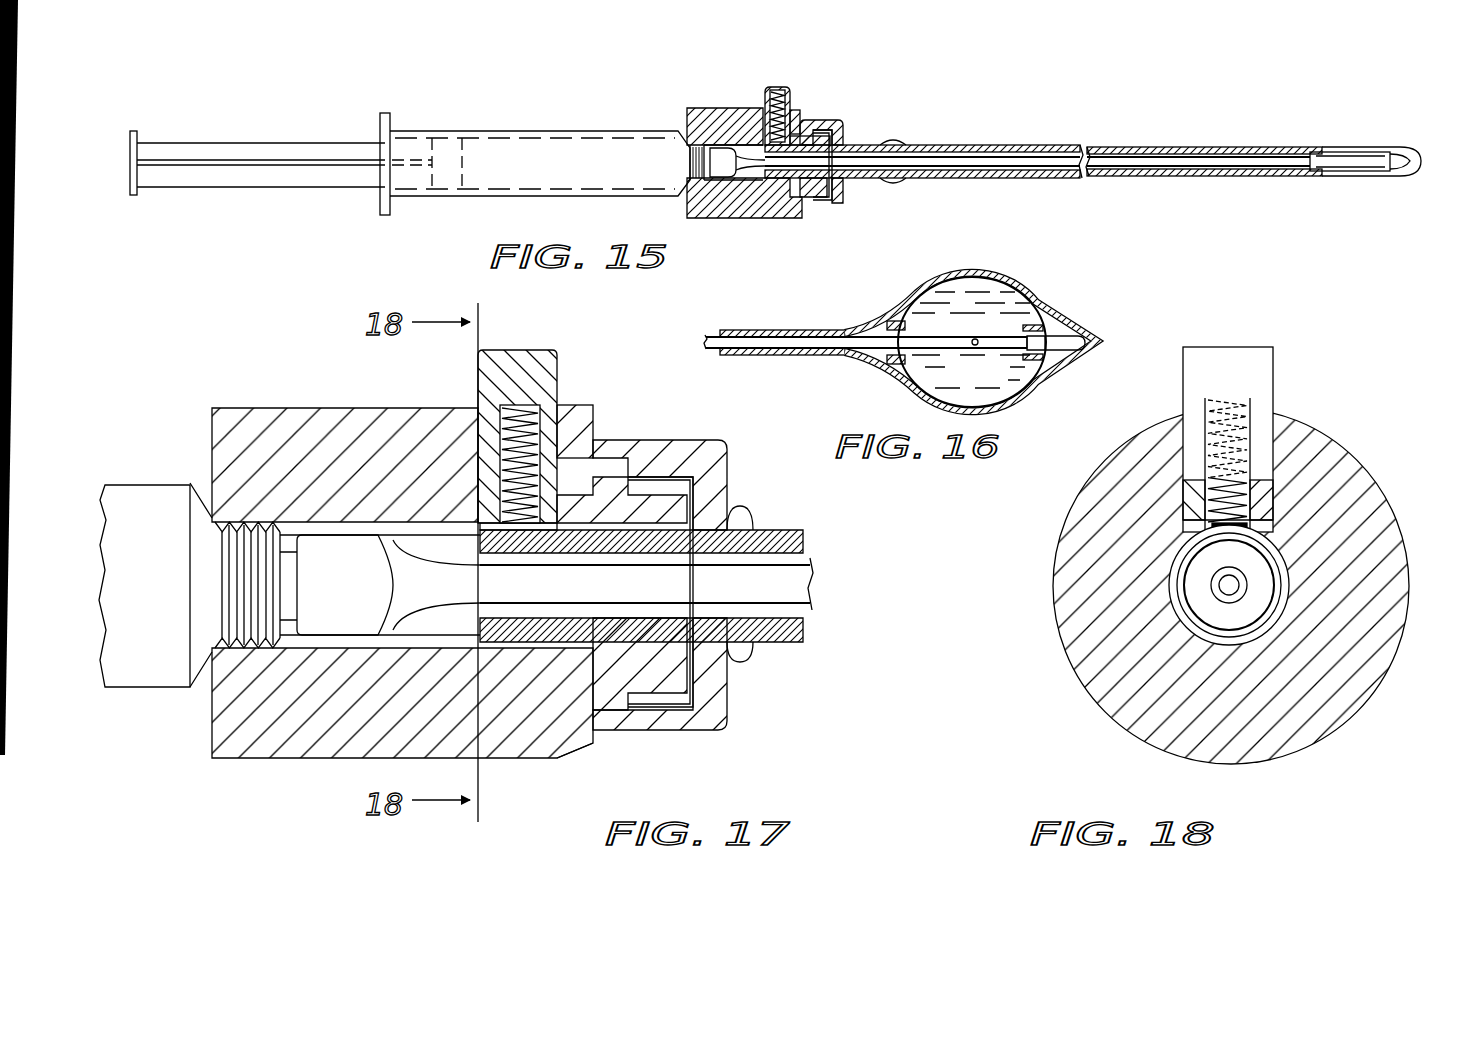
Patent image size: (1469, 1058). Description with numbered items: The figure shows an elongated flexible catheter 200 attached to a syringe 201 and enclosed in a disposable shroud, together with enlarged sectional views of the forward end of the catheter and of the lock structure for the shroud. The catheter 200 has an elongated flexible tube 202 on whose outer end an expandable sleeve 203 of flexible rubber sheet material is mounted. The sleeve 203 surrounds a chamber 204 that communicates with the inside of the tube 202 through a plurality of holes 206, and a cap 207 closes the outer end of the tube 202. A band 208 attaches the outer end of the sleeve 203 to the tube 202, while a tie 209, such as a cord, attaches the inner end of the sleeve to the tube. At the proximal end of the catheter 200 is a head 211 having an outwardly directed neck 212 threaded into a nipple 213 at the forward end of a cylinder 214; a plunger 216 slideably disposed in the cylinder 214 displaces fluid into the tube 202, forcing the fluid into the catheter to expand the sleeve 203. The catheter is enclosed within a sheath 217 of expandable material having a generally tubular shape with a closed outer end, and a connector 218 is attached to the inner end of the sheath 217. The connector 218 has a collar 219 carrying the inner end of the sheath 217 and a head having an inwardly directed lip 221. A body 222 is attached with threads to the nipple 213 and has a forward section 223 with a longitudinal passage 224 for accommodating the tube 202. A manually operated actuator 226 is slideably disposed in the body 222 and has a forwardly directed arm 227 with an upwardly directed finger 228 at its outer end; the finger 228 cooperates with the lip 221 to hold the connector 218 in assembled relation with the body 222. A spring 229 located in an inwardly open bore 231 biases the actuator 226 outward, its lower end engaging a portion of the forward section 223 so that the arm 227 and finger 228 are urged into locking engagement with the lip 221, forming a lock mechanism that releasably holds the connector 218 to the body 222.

In FIG. 15, the catheter 200 is at (1109, 154).
In FIG. 15, the syringe 201 is at (410, 153).
In FIG. 15, the tube 202 is at (1150, 160).
In FIG. 16, the tube 202 is at (863, 330).
In FIG. 17, the tube 202 is at (798, 584).
In FIG. 18, the tube 202 is at (1212, 583).
In FIG. 15, the expandable sleeve 203 is at (1345, 158).
In FIG. 16, the expandable sleeve 203 is at (1030, 383).
In FIG. 16, the chamber 204 is at (1000, 377).
In FIG. 16, the holes 206 is at (975, 336).
In FIG. 15, the cap 207 is at (1405, 162).
In FIG. 16, the cap 207 is at (1070, 337).
In FIG. 16, the band 208 is at (1033, 363).
In FIG. 16, the tie 209 is at (893, 323).
In FIG. 15, the head 211 is at (723, 158).
In FIG. 17, the head 211 is at (345, 548).
In FIG. 17, the neck 212 is at (290, 598).
In FIG. 15, the nipple 213 is at (690, 164).
In FIG. 17, the nipple 213 is at (250, 575).
In FIG. 15, the cylinder 214 is at (510, 196).
In FIG. 17, the cylinder 214 is at (150, 505).
In FIG. 15, the plunger 216 is at (278, 142).
In FIG. 15, the sheath 217 is at (1232, 178).
In FIG. 16, the sheath 217 is at (803, 357).
In FIG. 15, the connector 218 is at (850, 204).
In FIG. 17, the connector 218 is at (735, 490).
In FIG. 15, the collar 219 is at (875, 140).
In FIG. 17, the collar 219 is at (805, 545).
In FIG. 15, the lip 221 is at (808, 117).
In FIG. 17, the lip 221 is at (617, 462).
In FIG. 15, the body 222 is at (737, 212).
In FIG. 17, the body 222 is at (300, 745).
In FIG. 18, the body 222 is at (1108, 650).
In FIG. 17, the forward section 223 is at (585, 740).
In FIG. 17, the longitudinal passage 224 is at (478, 600).
In FIG. 15, the actuator 226 is at (783, 86).
In FIG. 17, the actuator 226 is at (535, 350).
In FIG. 18, the actuator 226 is at (1260, 372).
In FIG. 15, the arm 227 is at (796, 108).
In FIG. 17, the arm 227 is at (578, 500).
In FIG. 15, the finger 228 is at (827, 122).
In FIG. 17, the finger 228 is at (647, 490).
In FIG. 15, the spring 229 is at (765, 98).
In FIG. 17, the spring 229 is at (500, 518).
In FIG. 18, the spring 229 is at (1248, 487).
In FIG. 17, the bore 231 is at (492, 427).
In FIG. 18, the bore 231 is at (1195, 490).